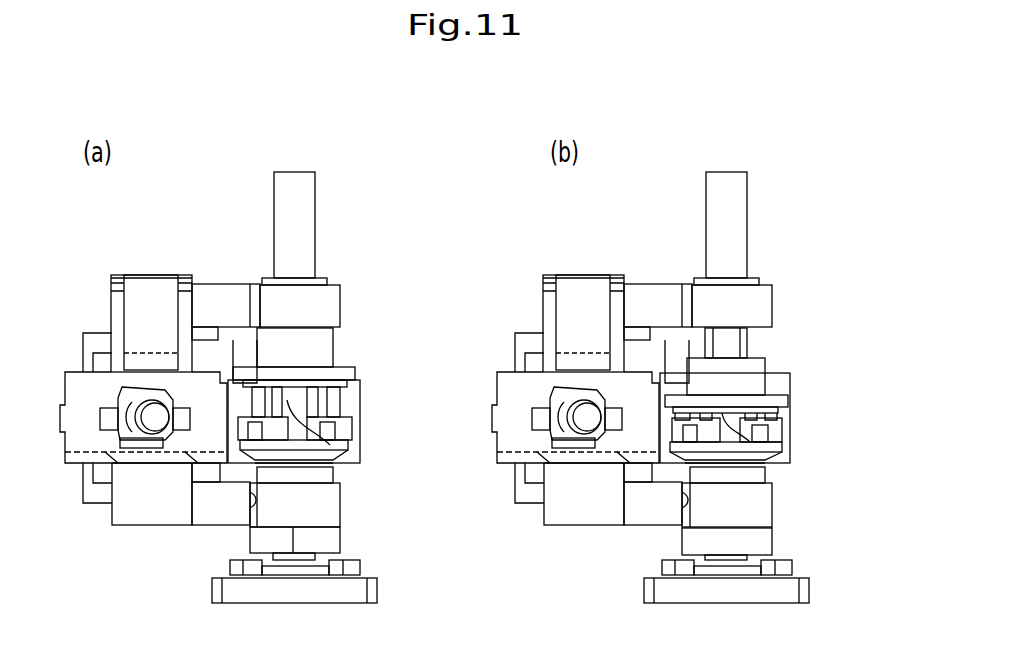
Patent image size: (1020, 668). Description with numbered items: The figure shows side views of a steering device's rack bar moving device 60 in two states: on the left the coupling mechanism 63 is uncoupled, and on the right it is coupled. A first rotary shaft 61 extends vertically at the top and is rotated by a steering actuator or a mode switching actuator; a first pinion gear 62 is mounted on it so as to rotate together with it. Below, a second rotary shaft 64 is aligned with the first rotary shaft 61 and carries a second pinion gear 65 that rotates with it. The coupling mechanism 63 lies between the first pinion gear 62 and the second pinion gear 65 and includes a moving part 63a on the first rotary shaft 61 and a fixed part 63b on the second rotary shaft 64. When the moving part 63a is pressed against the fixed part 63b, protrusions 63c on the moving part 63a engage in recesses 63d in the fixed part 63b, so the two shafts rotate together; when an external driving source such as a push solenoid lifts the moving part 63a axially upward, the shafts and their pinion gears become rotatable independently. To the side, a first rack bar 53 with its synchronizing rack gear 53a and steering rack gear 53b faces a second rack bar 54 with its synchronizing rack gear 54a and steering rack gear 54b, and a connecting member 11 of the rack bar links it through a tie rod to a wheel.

The connecting member 11 is at (150, 415).
The first rack bar 53 is at (152, 303).
The synchronizing rack gear 53a is at (140, 357).
The steering rack gear 53b is at (248, 307).
The second rack bar 54 is at (168, 502).
The synchronizing rack gear 54a is at (145, 450).
The steering rack gear 54b is at (253, 503).
The rack bar moving device 60 is at (383, 597).
The first rotary shaft 61 is at (305, 185).
The first pinion gear 62 is at (325, 307).
The coupling mechanism 63 is at (418, 310).
The moving part 63a is at (300, 378).
The fixed part 63b is at (318, 423).
The protrusions 63c is at (300, 440).
The recesses 63d is at (343, 458).
The second rotary shaft 64 is at (293, 478).
The second pinion gear 65 is at (320, 505).